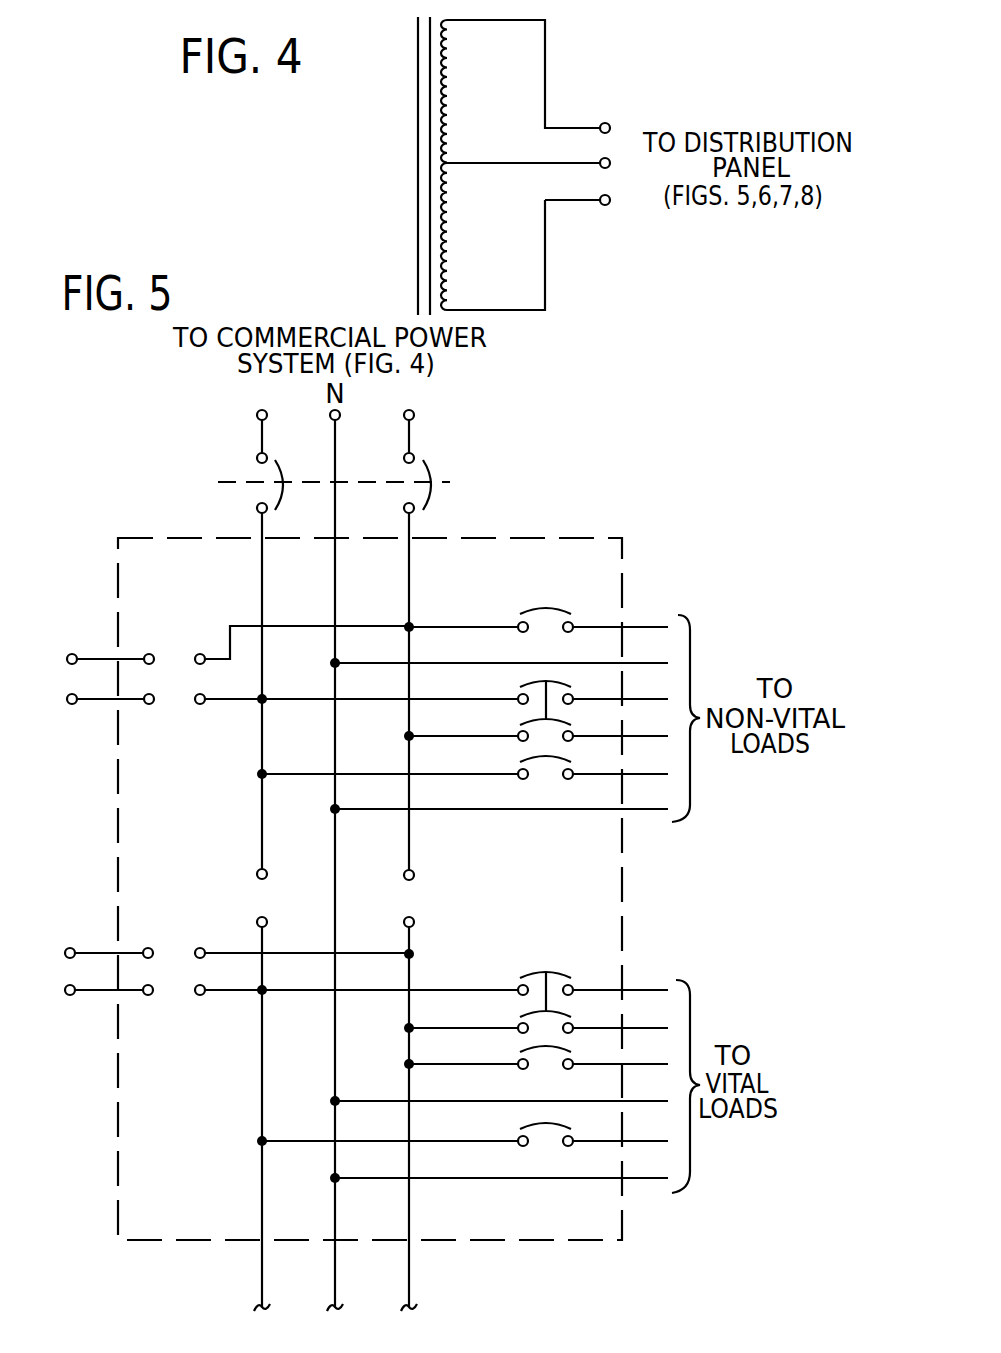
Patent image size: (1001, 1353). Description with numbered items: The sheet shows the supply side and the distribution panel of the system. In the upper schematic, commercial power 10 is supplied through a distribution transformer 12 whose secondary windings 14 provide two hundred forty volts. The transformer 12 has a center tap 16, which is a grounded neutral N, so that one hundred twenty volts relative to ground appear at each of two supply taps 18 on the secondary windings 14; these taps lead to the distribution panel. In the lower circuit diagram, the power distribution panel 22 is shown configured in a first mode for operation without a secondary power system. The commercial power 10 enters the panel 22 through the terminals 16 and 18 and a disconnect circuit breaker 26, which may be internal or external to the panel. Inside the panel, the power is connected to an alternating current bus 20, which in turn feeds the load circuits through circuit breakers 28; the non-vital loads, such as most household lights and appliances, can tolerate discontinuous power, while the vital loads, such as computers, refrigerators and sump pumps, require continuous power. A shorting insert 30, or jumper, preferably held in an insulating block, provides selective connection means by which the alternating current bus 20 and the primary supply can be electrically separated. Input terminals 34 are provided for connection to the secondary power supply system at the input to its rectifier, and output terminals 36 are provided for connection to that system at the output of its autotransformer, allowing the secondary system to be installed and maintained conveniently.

In FIG. 4, the commercial power 10 is at (497, 168).
In FIG. 4, the distribution transformer 12 is at (492, 96).
In FIG. 4, the secondary windings 14 is at (438, 160).
In FIG. 4, the center tap 16 is at (608, 159).
In FIG. 5, the center tap 16 is at (340, 413).
In FIG. 4, the supply taps 18 is at (607, 124).
In FIG. 5, the supply taps 18 is at (257, 415).
In FIG. 5, the alternating current bus 20 is at (260, 1037).
In FIG. 5, the power distribution panel 22 is at (118, 566).
In FIG. 5, the disconnect circuit breaker 26 is at (431, 470).
In FIG. 5, the circuit breakers 28 is at (542, 606).
In FIG. 5, the shorting insert 30 is at (260, 898).
In FIG. 5, the input terminals 34 is at (67, 698).
In FIG. 5, the output terminals 36 is at (65, 990).